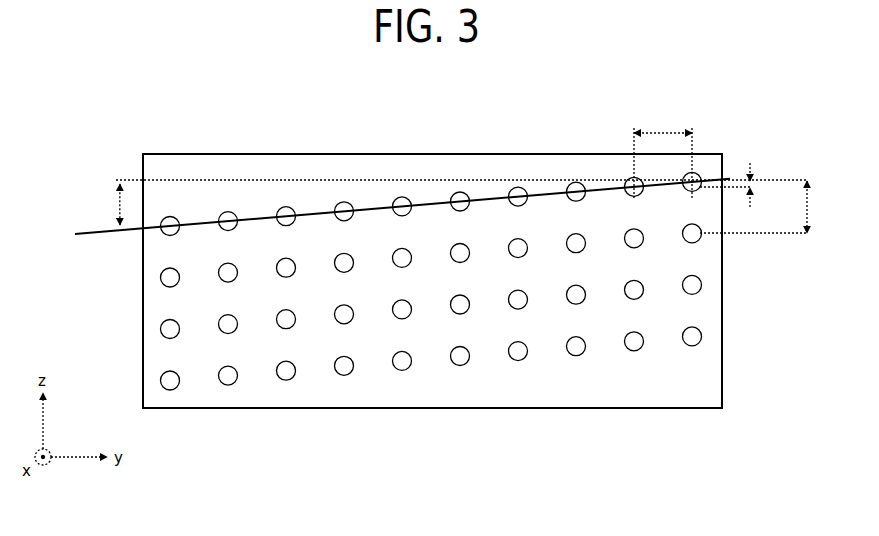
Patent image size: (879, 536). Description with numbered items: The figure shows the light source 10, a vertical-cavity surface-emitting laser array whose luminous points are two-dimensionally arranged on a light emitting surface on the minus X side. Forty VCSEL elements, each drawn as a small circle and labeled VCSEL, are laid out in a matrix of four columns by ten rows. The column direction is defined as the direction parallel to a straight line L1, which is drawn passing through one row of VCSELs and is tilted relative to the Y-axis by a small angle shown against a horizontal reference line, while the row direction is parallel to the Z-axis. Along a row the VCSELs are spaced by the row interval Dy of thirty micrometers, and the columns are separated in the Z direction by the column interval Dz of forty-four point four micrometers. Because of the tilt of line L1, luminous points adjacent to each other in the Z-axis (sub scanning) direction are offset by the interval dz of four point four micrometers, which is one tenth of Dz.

The light source 10 is at (478, 147).
The vertical-cavity surface-emitting laser VCSEL is at (289, 202).
The straight line L1 is at (388, 212).
The row interval Dy is at (663, 155).
The interval of adjacent luminous points in the Z-axis direction dz is at (752, 186).
The column interval Dz is at (808, 205).